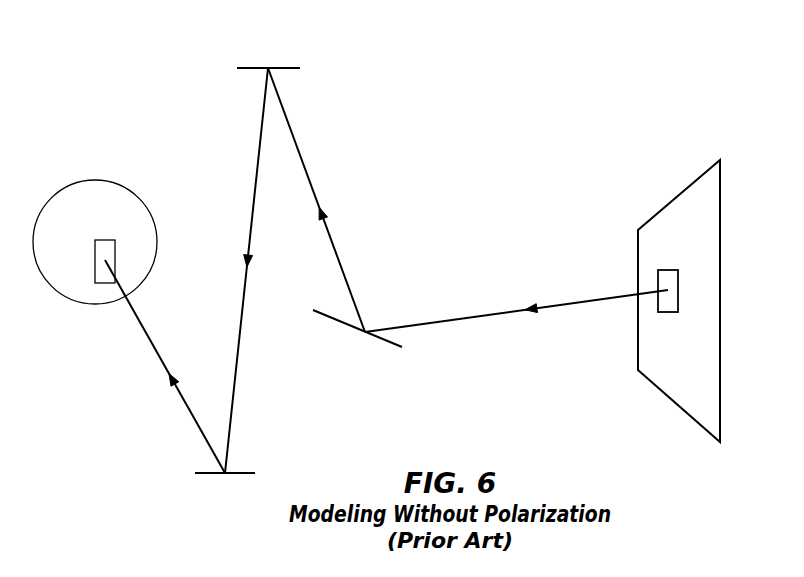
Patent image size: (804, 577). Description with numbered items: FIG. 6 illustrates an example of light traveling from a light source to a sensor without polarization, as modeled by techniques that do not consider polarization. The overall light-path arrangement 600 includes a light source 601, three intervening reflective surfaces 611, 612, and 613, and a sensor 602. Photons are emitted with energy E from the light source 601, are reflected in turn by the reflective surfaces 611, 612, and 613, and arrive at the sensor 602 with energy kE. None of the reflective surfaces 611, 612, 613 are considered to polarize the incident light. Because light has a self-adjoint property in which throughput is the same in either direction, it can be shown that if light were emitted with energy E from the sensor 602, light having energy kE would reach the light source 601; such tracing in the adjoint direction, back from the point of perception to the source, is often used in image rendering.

The light path modeling system without polarization 600 is at (502, 65).
The light source 601 is at (95, 258).
The sensor 602 is at (656, 302).
The reflective surface 611 is at (225, 476).
The reflective surface 612 is at (276, 67).
The reflective surface 613 is at (361, 335).